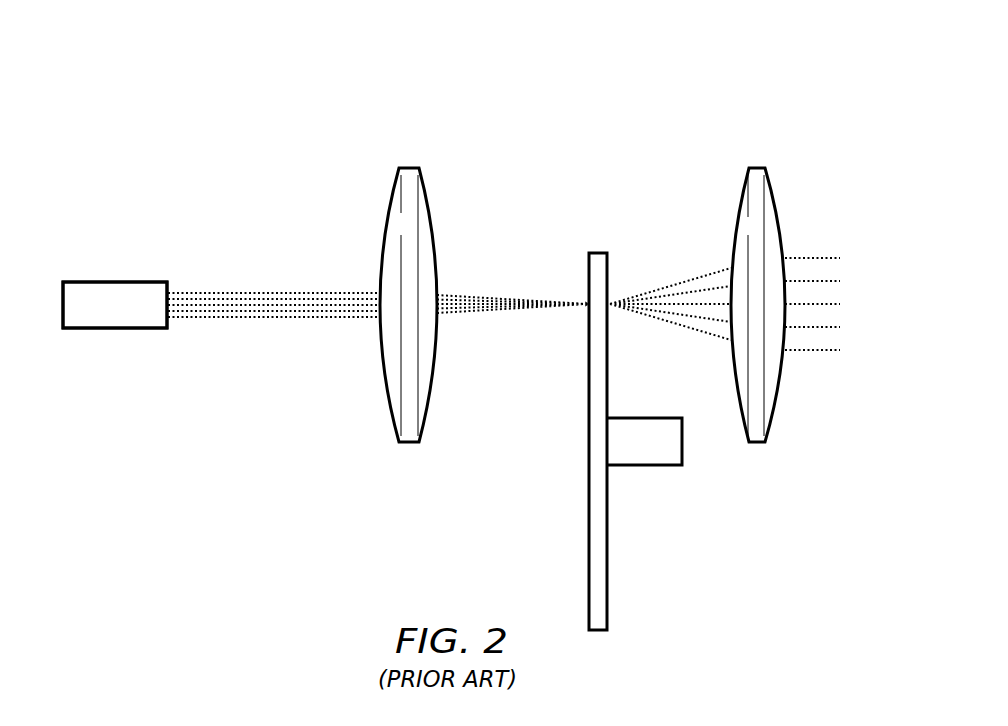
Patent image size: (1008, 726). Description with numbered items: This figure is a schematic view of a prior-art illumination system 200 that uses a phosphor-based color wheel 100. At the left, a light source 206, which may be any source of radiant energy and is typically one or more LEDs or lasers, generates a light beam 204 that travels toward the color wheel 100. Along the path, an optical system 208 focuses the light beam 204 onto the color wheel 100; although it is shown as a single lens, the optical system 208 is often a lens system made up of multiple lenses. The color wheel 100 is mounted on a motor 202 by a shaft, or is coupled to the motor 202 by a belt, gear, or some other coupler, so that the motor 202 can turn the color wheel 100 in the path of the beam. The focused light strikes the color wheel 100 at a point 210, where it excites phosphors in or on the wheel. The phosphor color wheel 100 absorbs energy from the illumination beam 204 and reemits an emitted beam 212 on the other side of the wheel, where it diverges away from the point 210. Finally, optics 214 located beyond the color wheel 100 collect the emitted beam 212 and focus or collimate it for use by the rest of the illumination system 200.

The illumination system 200 is at (198, 122).
The light source 206 is at (115, 282).
The light beam 204 is at (277, 292).
The optical system 208 is at (408, 168).
The point 210 is at (568, 284).
The color wheel 100 is at (588, 550).
The motor 202 is at (647, 468).
The emitted beam 212 is at (670, 283).
The optics 214 is at (760, 168).